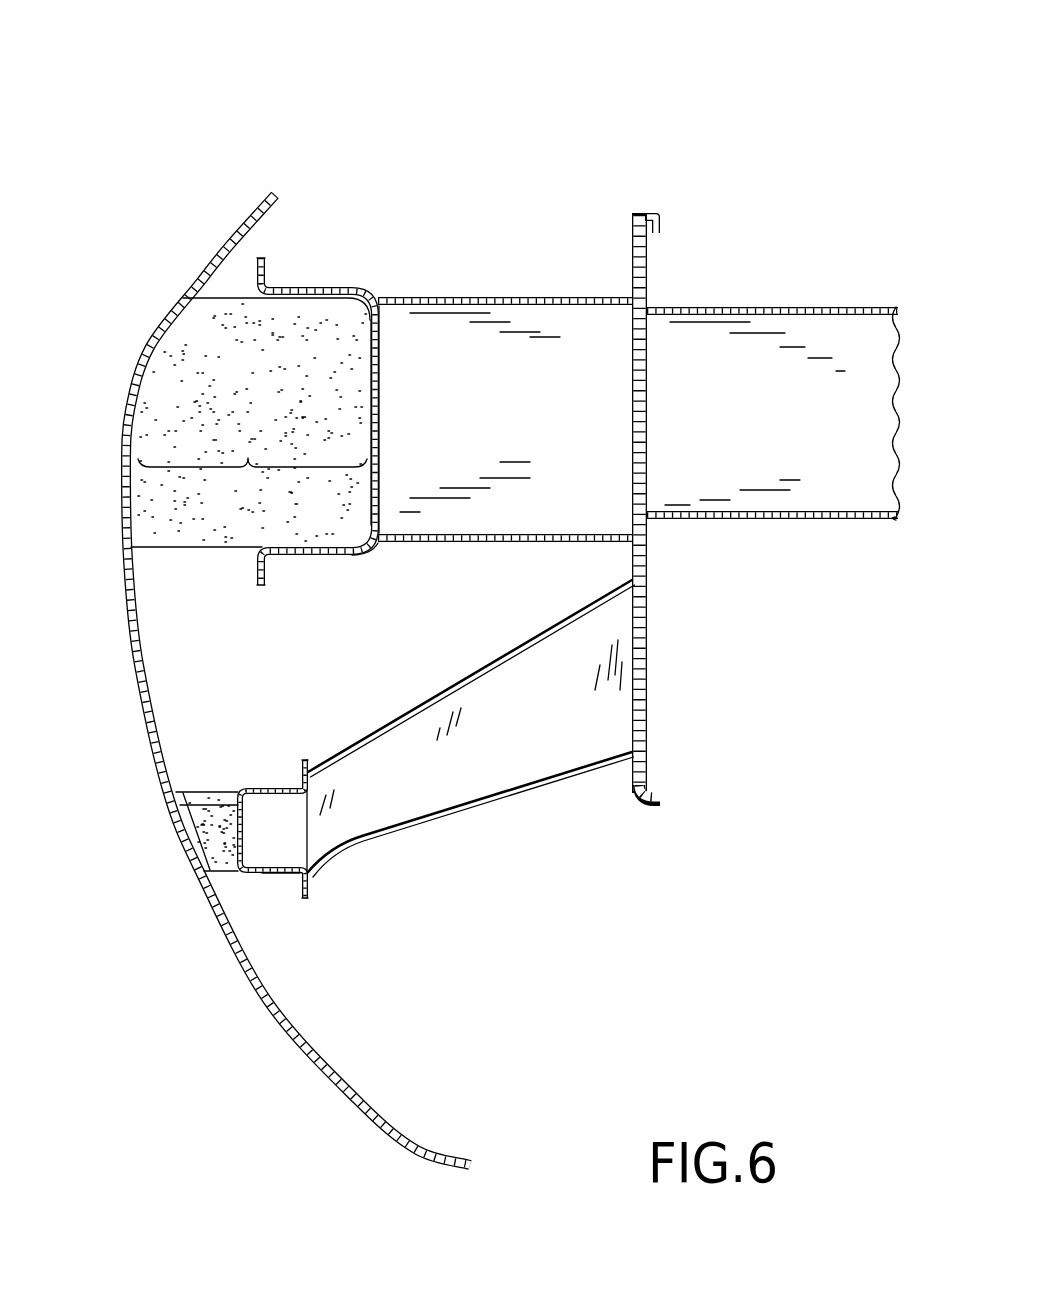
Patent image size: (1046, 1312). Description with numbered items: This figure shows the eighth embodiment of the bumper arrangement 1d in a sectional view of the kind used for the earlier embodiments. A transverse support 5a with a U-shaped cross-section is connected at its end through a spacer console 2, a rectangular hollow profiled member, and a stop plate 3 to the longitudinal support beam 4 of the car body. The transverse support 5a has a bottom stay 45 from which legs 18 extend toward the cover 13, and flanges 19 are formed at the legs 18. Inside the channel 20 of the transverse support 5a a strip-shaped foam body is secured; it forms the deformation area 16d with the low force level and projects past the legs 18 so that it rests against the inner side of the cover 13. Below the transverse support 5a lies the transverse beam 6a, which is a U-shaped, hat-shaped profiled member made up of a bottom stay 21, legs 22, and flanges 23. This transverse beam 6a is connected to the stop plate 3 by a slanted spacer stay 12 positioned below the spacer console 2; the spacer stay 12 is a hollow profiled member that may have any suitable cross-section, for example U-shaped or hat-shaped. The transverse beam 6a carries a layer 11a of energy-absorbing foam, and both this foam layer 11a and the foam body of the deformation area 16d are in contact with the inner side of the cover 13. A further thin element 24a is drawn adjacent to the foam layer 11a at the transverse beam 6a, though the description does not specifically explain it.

The bumper arrangement 1d is at (247, 126).
The spacer console 2 is at (549, 293).
The stop plate 3 is at (648, 378).
The longitudinal support beam 4 is at (787, 302).
The transverse support 5a is at (357, 563).
The transverse beam 6a is at (282, 887).
The layer of energy-absorbing material 11a is at (202, 827).
The spacer stay 12 is at (507, 740).
The cover 13 is at (133, 665).
The deformation area 16d is at (250, 422).
The legs 18 is at (317, 288).
The flanges 19 is at (265, 262).
The channel 20 is at (380, 394).
The bottom stay 21 is at (197, 860).
The legs 22 is at (267, 785).
The flanges 23 is at (307, 762).
The cover layer 24a is at (233, 805).
The bottom stay 45 is at (377, 437).